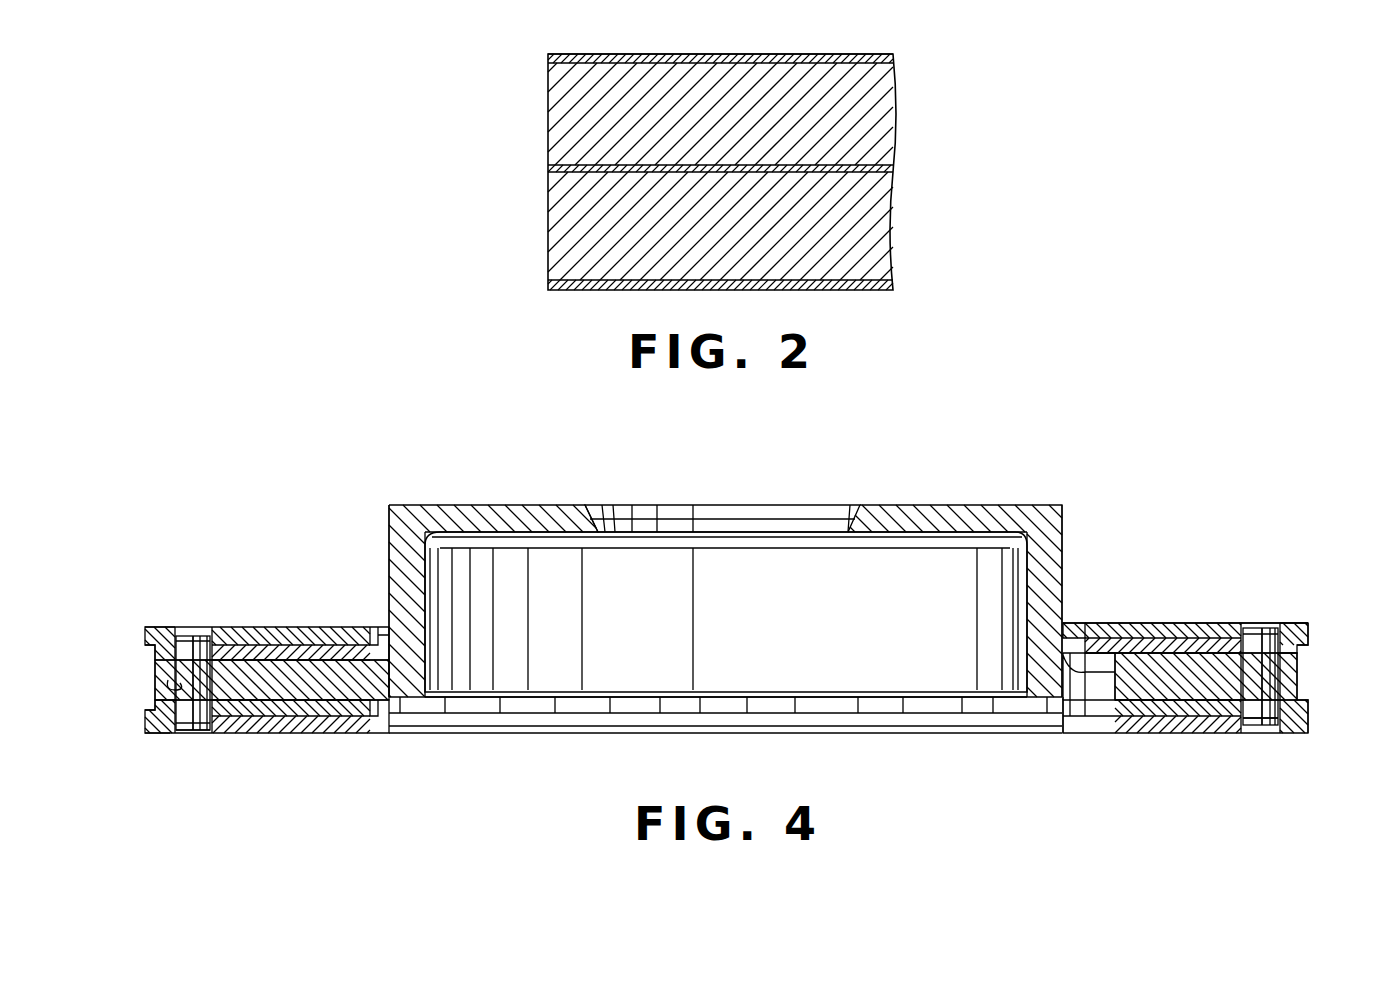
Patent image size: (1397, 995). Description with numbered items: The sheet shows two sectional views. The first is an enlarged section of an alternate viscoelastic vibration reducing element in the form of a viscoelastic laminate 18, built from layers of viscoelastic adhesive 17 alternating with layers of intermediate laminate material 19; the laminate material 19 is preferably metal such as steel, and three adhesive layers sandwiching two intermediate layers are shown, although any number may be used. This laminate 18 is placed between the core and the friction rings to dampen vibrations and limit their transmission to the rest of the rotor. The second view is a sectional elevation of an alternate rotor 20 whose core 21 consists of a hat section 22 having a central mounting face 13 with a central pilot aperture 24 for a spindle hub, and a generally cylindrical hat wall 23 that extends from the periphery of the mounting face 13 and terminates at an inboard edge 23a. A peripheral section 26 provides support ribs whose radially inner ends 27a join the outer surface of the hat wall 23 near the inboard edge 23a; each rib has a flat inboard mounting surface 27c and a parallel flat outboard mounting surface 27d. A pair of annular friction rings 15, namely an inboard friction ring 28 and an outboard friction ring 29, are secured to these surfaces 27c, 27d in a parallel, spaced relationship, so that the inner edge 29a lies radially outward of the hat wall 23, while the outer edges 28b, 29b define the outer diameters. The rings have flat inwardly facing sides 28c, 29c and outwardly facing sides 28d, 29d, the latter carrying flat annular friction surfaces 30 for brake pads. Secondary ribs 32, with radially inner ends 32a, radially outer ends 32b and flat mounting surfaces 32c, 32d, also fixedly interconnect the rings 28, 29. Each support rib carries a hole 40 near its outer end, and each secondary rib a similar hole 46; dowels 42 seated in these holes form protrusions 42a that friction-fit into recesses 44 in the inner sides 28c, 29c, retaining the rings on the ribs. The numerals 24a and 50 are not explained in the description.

In FIG. 4, the mounting face 13 is at (930, 536).
In FIG. 4, the annular friction rings 15 is at (1306, 643).
In FIG. 2, the viscoelastic adhesive 17 is at (895, 60).
In FIG. 2, the viscoelastic laminate 18 is at (482, 148).
In FIG. 2, the intermediate laminate material 19 is at (880, 122).
In FIG. 4, the rotor 20 is at (1132, 490).
In FIG. 4, the core 21 is at (378, 530).
In FIG. 4, the hat section 22 is at (458, 505).
In FIG. 4, the hat wall 23 is at (1065, 546).
In FIG. 4, the inboard edge 23a is at (1062, 700).
In FIG. 4, the central pilot aperture 24 is at (598, 510).
In FIG. 4, the bottom opening 24a is at (1085, 733).
In FIG. 4, the peripheral section 26 is at (160, 678).
In FIG. 4, the radially inner ends 27a is at (400, 706).
In FIG. 4, the inboard mounting surface 27c is at (250, 706).
In FIG. 4, the outboard mounting surface 27d is at (290, 652).
In FIG. 4, the inboard friction ring 28 is at (311, 727).
In FIG. 4, the radially outer edge 28b is at (1310, 722).
In FIG. 4, the inwardly facing side 28c is at (150, 712).
In FIG. 4, the outwardly facing side 28d is at (156, 736).
In FIG. 4, the outboard friction ring 29 is at (1190, 625).
In FIG. 4, the radially inner edge 29a is at (1082, 628).
In FIG. 4, the radially outer edge 29b is at (1310, 624).
In FIG. 4, the inwardly facing side 29c is at (153, 655).
In FIG. 4, the outwardly facing side 29d is at (165, 626).
In FIG. 4, the friction surfaces 30 is at (340, 627).
In FIG. 4, the secondary ribs 32 is at (1190, 686).
In FIG. 4, the radially inner ends 32a is at (1110, 672).
In FIG. 4, the radially outer ends 32b is at (1270, 686).
In FIG. 4, the inboard mounting surface 32c is at (1152, 702).
In FIG. 4, the outboard mounting surface 32d is at (1142, 658).
In FIG. 4, the hole 40 is at (165, 690).
In FIG. 4, the dowels 42 is at (195, 658).
In FIG. 4, the protrusions 42a is at (166, 731).
In FIG. 4, the recesses 44 is at (195, 636).
In FIG. 4, the hole 46 is at (1248, 686).
In FIG. 4, the seal 50 is at (150, 707).